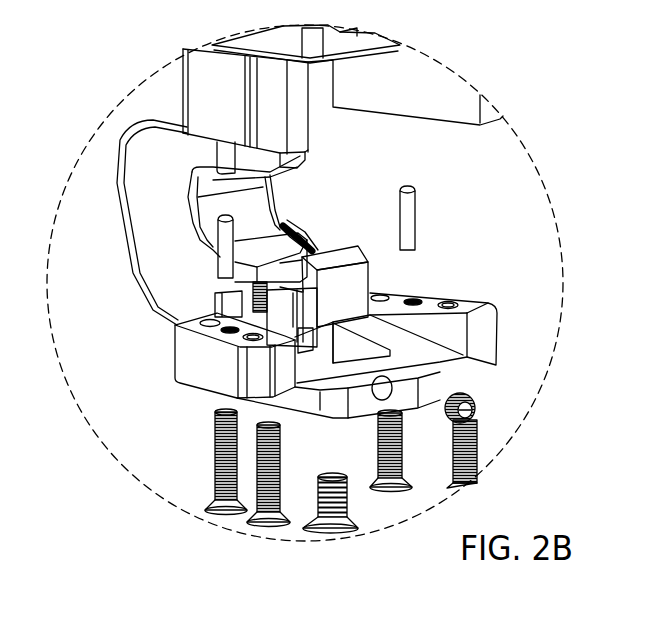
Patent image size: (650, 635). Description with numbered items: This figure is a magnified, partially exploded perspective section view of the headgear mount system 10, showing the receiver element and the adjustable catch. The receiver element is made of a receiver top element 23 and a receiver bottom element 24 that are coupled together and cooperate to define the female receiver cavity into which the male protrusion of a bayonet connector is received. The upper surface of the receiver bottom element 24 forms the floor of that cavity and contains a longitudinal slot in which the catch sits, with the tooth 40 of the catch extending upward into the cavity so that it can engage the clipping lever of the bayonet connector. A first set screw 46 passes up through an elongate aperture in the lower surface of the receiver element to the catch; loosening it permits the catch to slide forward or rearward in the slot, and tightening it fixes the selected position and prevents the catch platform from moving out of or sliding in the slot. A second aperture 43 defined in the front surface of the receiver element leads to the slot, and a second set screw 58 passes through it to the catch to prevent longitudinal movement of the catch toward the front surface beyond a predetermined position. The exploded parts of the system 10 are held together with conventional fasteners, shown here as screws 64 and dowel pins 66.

The headgear mount system 10 is at (568, 139).
The receiver top element 23 is at (220, 70).
The receiver bottom element 24 is at (192, 355).
The tooth 40 is at (350, 288).
The second aperture 43 is at (400, 383).
The first set screw 46 is at (351, 519).
The second set screw 58 is at (450, 422).
The screws 64 is at (210, 472).
The dowel pins 66 is at (224, 250).